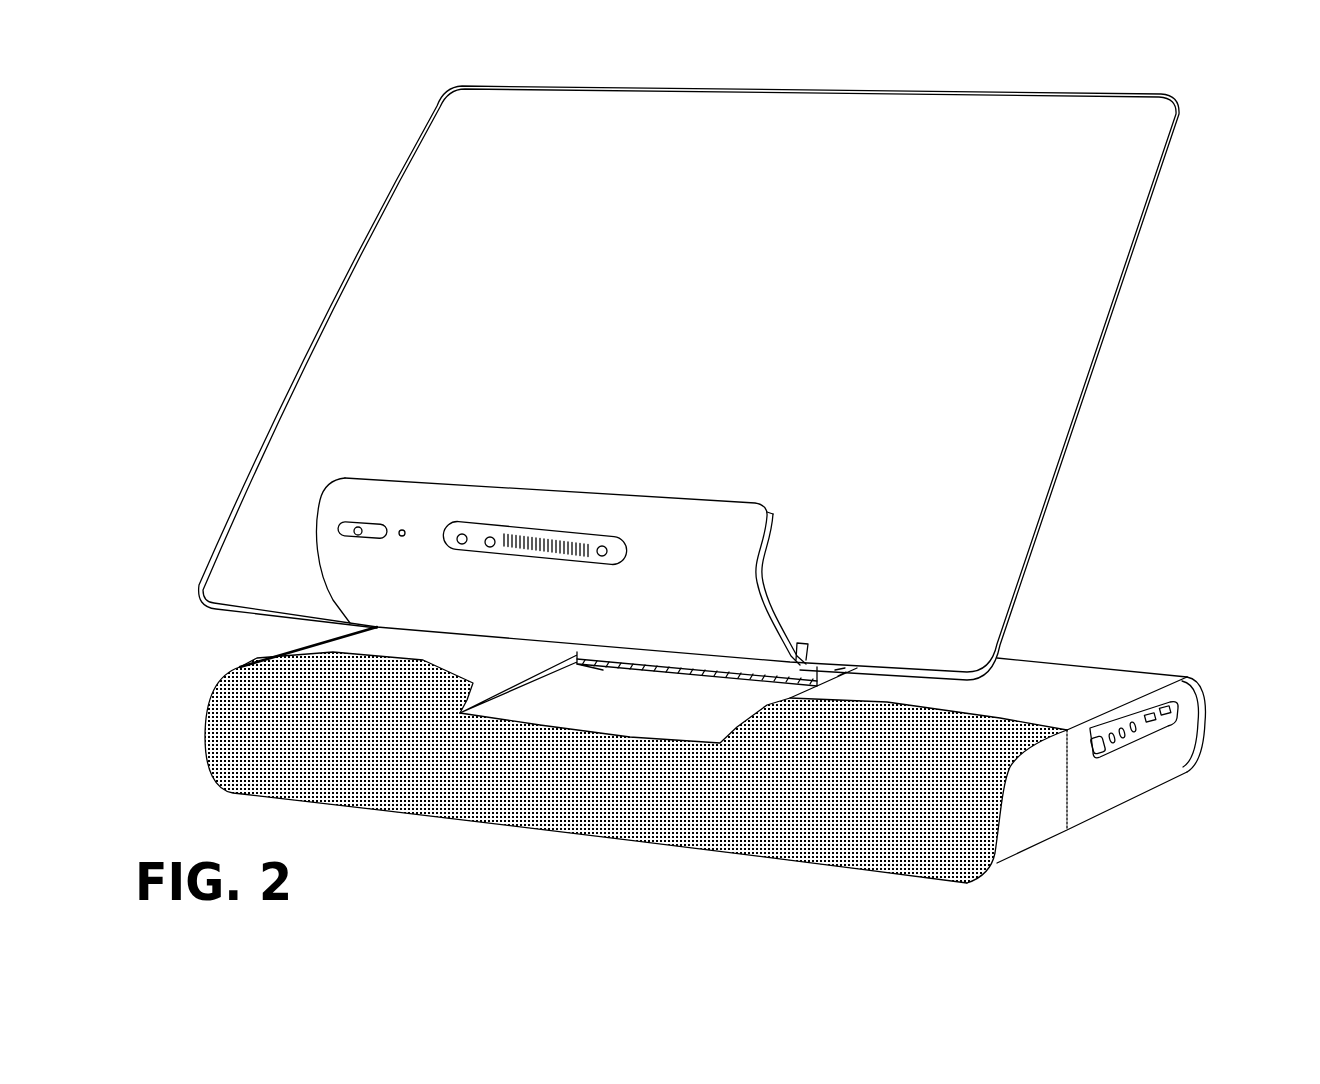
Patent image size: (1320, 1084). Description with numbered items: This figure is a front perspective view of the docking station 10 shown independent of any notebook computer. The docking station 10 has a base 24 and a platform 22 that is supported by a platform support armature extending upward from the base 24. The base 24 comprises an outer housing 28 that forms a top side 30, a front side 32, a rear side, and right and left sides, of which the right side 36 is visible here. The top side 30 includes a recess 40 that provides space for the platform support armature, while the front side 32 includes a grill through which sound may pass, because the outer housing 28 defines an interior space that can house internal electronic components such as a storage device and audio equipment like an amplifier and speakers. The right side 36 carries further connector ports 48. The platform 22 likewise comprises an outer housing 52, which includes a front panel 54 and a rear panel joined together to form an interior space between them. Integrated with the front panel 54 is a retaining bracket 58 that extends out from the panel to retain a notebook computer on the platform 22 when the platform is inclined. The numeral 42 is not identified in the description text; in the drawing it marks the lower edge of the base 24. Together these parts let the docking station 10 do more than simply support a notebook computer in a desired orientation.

The docking station 10 is at (738, 498).
The platform 22 is at (710, 383).
The base 24 is at (740, 756).
The outer housing 28 is at (1203, 705).
The top side 30 is at (1025, 681).
The front side 32 is at (789, 838).
The right side 36 is at (1088, 800).
The recess 40 is at (666, 683).
The bottom edge of base 42 is at (535, 833).
The connector ports 48 is at (1134, 739).
The outer housing 52 is at (1161, 177).
The front panel 54 is at (313, 352).
The retaining bracket 58 is at (668, 517).